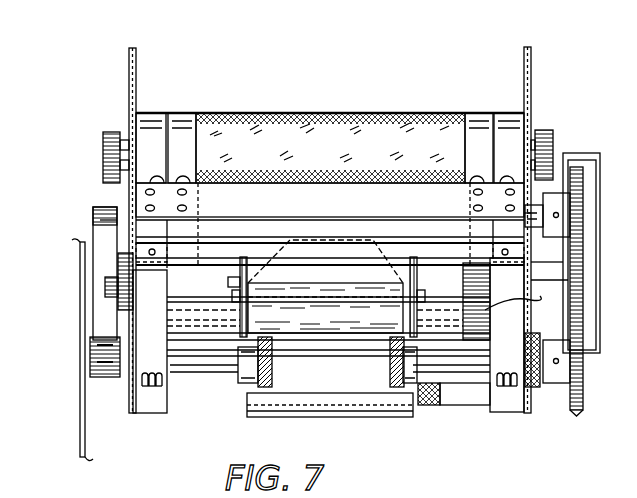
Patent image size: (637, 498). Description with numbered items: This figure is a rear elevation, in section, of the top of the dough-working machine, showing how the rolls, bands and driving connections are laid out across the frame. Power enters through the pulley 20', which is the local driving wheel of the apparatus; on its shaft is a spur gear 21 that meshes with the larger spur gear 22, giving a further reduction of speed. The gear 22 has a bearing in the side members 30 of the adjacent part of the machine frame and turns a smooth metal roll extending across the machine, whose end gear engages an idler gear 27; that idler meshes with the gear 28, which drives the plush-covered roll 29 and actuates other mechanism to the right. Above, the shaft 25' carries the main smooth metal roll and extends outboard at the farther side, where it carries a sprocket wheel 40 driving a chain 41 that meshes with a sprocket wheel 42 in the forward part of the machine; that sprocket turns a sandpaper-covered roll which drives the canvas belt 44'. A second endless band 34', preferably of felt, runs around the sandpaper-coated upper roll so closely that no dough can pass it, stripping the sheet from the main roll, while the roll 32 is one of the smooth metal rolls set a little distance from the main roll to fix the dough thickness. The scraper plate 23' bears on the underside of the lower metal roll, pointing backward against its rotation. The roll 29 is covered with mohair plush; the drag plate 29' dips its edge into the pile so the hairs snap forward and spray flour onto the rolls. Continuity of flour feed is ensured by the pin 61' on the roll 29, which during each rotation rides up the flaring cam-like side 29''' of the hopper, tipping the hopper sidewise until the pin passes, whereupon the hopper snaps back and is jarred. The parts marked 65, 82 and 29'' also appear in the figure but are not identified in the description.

The side frame bar 65 is at (136, 76).
The adjusting knob 82 is at (113, 132).
The endless band 34' is at (330, 133).
The spur gear 22 is at (103, 206).
The shaft 25' is at (559, 185).
The sprocket wheel 40 is at (586, 190).
The idler gear 27 is at (531, 266).
The chain 41 is at (580, 282).
The gear 28 is at (540, 300).
The roll 32 is at (330, 247).
The drag plate 29' is at (220, 322).
The roll 29 is at (325, 286).
The side members 30 is at (328, 335).
The spur gear 21 is at (105, 378).
The pulley 20' is at (88, 364).
The pin 61' is at (297, 350).
The hopper side 29''' is at (308, 366).
The bearing 29'' is at (331, 378).
The scraper plate 23' is at (330, 422).
The canvas belt 44' is at (454, 414).
The sprocket wheel 42 is at (583, 386).